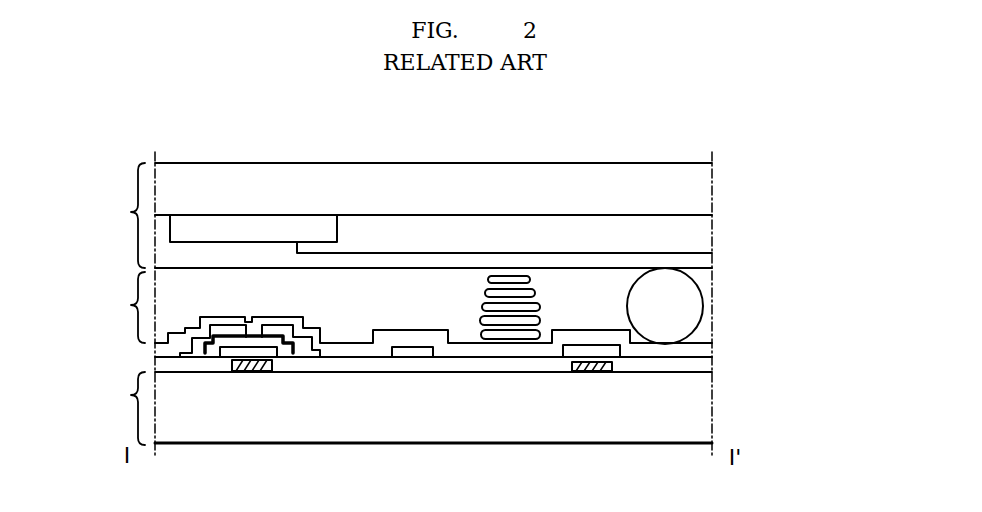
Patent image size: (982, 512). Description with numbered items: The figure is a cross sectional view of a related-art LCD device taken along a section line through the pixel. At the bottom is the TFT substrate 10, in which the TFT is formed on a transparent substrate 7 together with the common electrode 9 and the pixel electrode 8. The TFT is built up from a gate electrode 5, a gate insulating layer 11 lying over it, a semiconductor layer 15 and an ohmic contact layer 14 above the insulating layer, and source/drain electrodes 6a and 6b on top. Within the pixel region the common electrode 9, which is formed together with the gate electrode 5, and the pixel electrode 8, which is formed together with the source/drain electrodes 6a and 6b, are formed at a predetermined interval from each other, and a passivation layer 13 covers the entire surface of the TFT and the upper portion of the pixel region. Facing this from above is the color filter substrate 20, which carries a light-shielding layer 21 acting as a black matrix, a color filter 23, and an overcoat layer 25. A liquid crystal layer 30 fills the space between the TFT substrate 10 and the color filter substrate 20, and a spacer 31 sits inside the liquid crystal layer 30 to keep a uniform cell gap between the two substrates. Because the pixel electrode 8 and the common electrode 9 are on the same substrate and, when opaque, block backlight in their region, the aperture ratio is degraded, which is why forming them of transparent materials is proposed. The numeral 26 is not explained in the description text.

The gate electrode 5 is at (248, 350).
The source electrode 6a is at (185, 357).
The drain electrode 6b is at (316, 350).
The transparent substrate 7 is at (698, 407).
The pixel electrode 8 is at (416, 350).
The common electrode 9 is at (599, 372).
The TFT substrate 10 is at (122, 408).
The gate insulating layer 11 is at (705, 363).
The passivation layer 13 is at (708, 350).
The ohmic contact layer 14 is at (211, 350).
The semiconductor layer 15 is at (237, 370).
The color filter substrate 20 is at (122, 215).
The light-shielding layer 21 is at (214, 222).
The color filter 23 is at (700, 230).
The overcoat layer 25 is at (703, 262).
The upper substrate 26 is at (700, 183).
The liquid crystal layer 30 is at (319, 307).
The spacer 31 is at (663, 333).